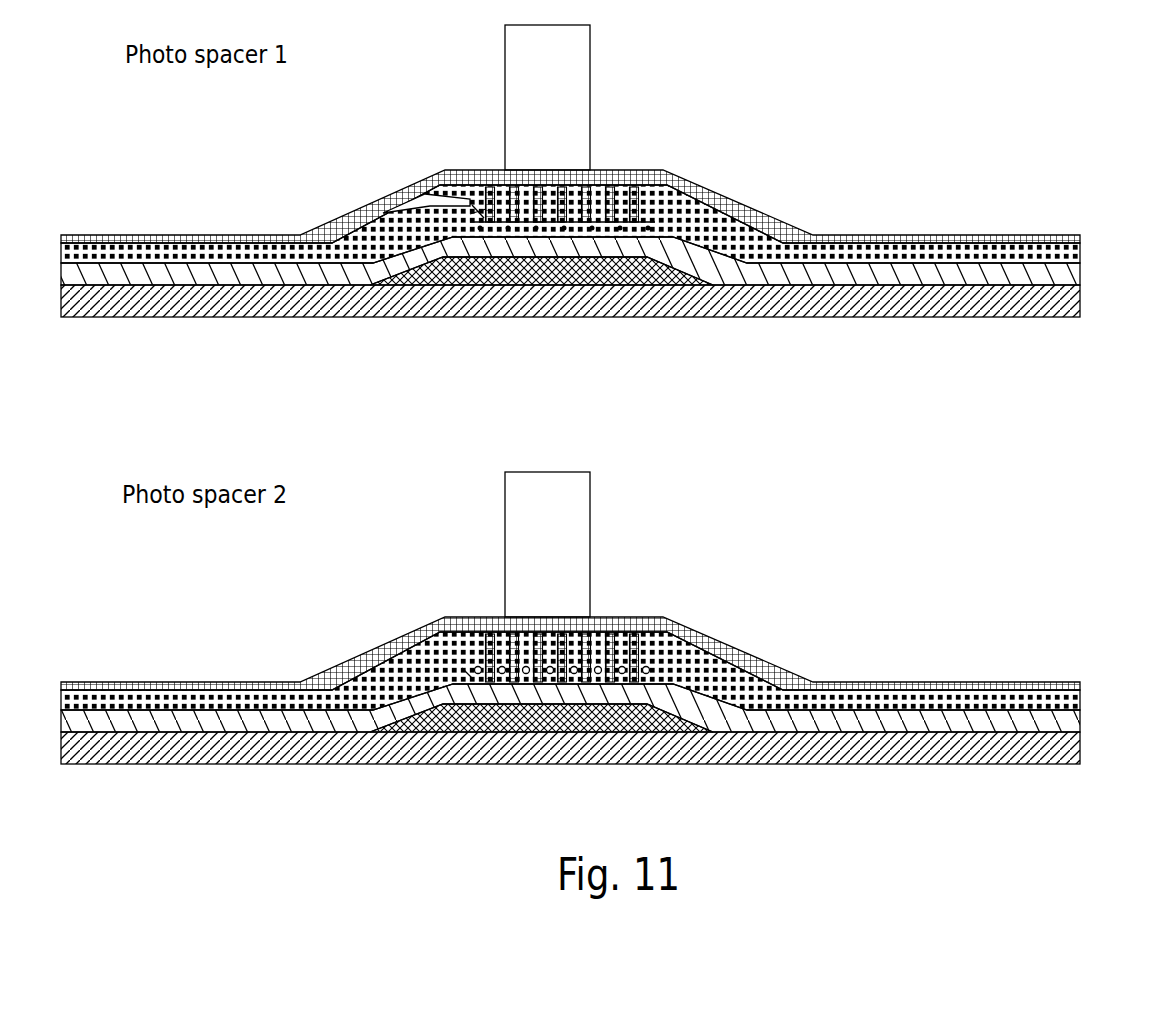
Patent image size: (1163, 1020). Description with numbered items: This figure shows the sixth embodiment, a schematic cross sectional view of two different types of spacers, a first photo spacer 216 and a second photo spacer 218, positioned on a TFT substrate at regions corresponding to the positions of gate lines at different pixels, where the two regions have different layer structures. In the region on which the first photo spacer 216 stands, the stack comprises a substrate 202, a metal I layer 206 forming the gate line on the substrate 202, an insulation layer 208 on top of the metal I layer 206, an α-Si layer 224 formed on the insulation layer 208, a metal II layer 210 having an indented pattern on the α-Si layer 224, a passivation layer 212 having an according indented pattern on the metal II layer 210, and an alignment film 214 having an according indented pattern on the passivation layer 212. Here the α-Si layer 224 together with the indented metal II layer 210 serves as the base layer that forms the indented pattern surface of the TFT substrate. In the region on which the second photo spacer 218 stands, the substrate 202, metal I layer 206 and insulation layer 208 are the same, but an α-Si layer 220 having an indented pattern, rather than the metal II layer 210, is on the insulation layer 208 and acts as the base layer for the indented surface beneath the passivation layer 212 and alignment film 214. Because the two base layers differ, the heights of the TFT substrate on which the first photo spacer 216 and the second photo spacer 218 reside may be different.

The substrate 202 is at (1082, 307).
The metal I layer 206 is at (617, 285).
The insulation layer 208 is at (1082, 278).
The passivation layer 212 is at (1082, 258).
The alignment film 214 is at (1082, 240).
The photo spacer 1 216 is at (577, 100).
The photo spacer 2 218 is at (577, 547).
The metal II layer 210 is at (478, 212).
The α-Si layer 224 is at (383, 212).
The α-Si layer 220 is at (467, 673).